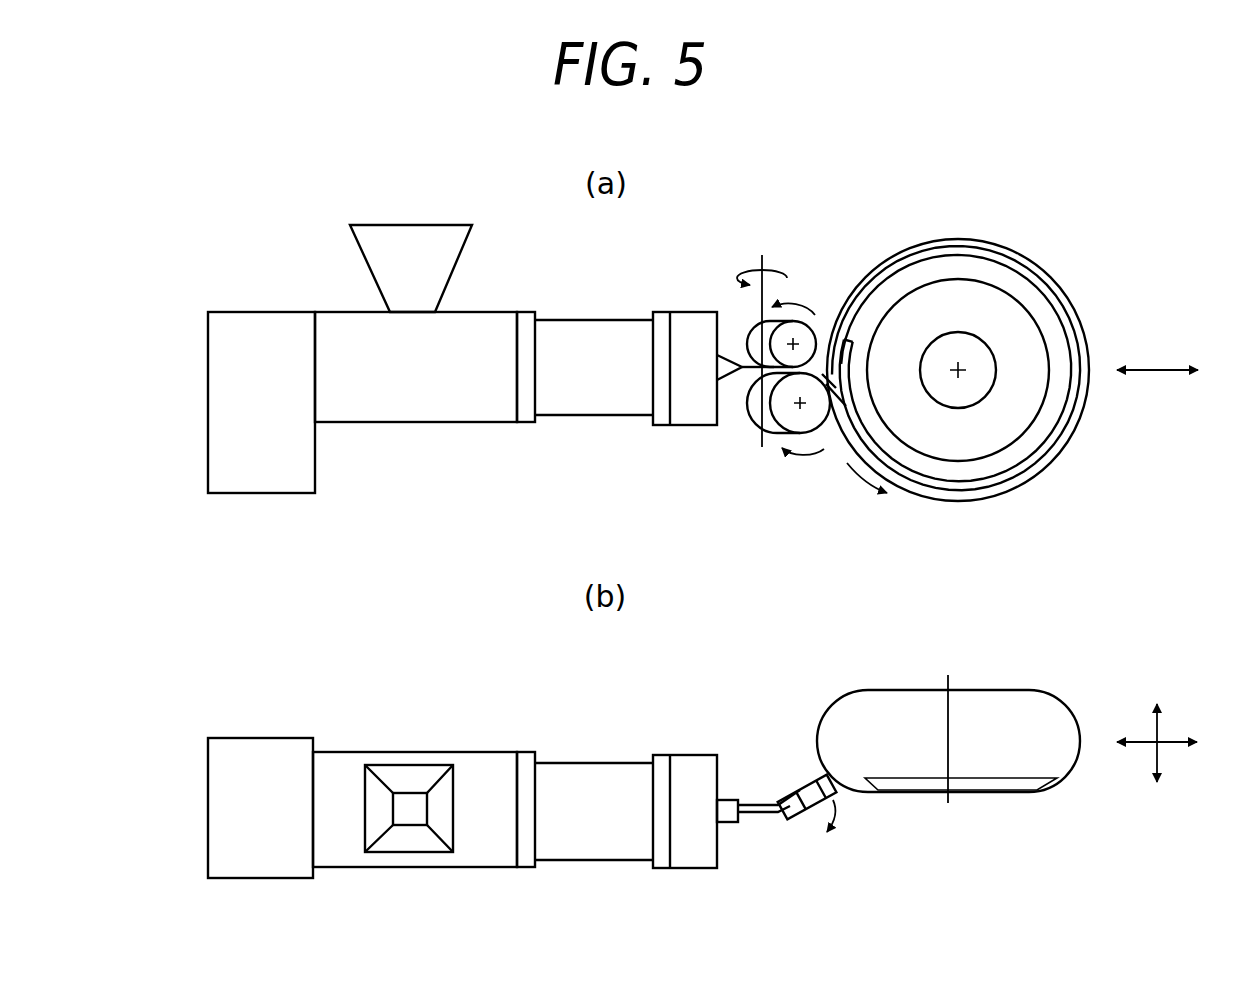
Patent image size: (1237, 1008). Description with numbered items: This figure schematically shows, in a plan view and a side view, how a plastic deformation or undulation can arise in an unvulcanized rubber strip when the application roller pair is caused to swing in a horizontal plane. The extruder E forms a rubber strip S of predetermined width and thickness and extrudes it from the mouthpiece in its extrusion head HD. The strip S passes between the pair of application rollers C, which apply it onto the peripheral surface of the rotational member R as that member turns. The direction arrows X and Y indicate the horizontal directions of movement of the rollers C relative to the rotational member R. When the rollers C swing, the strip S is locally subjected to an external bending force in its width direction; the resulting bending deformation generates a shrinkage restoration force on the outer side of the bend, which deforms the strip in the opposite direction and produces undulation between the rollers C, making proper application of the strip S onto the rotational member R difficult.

The extruder E is at (500, 290).
The extrusion head HD is at (724, 383).
The application rollers C is at (771, 452).
The rubber strip S is at (757, 366).
The rotational member R is at (1062, 264).
The X direction X is at (1158, 721).
The Y direction Y is at (1173, 542).